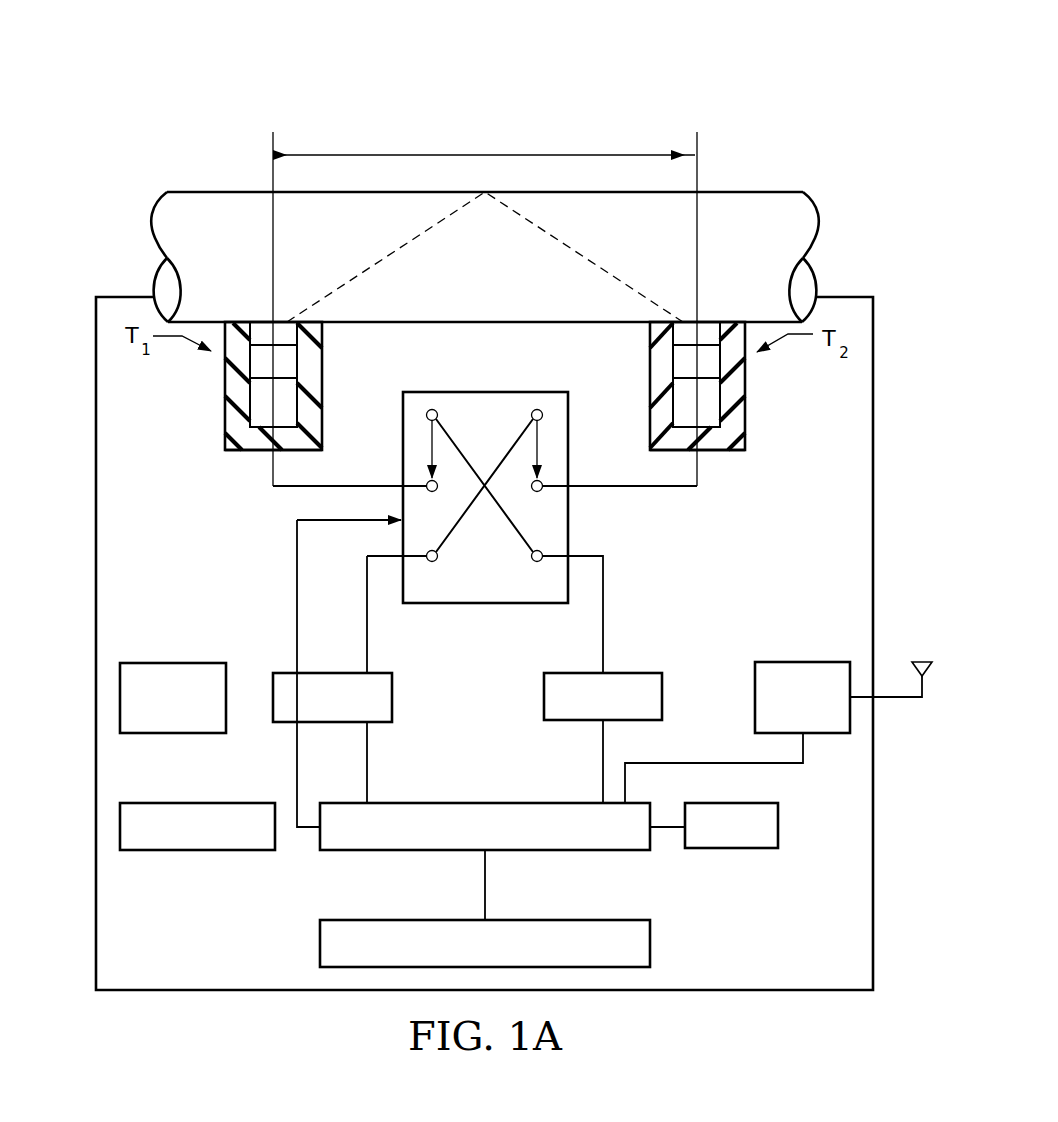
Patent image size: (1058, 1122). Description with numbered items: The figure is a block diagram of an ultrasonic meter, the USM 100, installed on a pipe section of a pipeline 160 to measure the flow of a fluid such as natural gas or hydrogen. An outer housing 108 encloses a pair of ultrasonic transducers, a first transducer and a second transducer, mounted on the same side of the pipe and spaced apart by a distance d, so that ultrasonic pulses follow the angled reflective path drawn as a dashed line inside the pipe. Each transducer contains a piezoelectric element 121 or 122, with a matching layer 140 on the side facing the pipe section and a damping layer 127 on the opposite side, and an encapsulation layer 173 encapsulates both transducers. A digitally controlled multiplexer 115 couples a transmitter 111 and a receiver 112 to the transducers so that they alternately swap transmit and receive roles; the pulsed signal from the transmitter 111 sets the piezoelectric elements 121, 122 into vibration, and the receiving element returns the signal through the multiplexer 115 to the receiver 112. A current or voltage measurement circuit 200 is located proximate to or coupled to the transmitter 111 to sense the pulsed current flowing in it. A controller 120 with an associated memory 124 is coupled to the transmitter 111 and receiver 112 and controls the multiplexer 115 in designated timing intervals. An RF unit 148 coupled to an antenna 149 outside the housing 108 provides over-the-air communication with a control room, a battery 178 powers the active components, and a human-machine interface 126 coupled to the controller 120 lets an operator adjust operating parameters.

The USM 100 is at (261, 97).
The pipeline 160 is at (228, 190).
The outer housing 108 is at (124, 296).
The matching layer 140 is at (262, 331).
The piezoelectric element 121 is at (258, 365).
The piezoelectric element 122 is at (712, 365).
The damping layer 127 is at (258, 407).
The encapsulation layer 173 is at (717, 440).
The multiplexer 115 is at (485, 604).
The current or voltage measurement circuit 200 is at (152, 710).
The transmitter 111 is at (283, 722).
The receiver 112 is at (662, 697).
The RF unit 148 is at (825, 733).
The antenna 149 is at (925, 662).
The battery 178 is at (200, 850).
The controller 120 is at (440, 850).
The memory 124 is at (730, 848).
The human-machine interface 126 is at (320, 945).